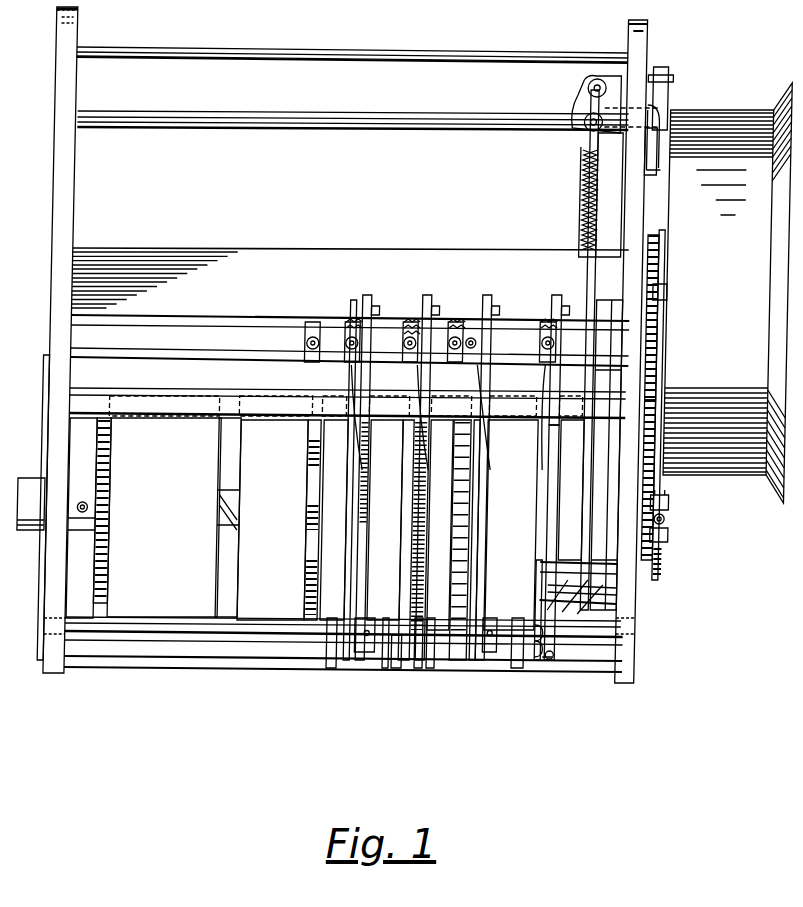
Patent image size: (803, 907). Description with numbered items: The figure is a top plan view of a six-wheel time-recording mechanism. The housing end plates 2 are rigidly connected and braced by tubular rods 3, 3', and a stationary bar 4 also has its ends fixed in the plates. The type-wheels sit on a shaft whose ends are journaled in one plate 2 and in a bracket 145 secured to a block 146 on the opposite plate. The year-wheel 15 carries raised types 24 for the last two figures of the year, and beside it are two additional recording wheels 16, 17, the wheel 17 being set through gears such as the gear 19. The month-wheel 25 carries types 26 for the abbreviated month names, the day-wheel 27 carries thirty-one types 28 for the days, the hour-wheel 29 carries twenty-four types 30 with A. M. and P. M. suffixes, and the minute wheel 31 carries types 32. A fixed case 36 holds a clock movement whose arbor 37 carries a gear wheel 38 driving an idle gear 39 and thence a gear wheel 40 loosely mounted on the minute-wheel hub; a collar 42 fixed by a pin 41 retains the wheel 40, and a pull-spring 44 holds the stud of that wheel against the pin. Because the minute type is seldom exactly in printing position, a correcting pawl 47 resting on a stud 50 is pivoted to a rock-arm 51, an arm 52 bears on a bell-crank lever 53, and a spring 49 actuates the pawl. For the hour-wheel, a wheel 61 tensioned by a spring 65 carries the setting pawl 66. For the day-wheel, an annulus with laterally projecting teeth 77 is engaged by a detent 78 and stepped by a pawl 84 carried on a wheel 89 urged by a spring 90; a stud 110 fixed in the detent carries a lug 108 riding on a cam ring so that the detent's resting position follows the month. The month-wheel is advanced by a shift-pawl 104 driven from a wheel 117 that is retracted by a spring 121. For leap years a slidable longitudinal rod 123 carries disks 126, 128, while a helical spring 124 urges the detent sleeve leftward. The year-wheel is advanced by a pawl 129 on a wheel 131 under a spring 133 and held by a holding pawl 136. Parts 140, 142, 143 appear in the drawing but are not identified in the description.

The end plate 2 is at (69, 676).
The tubular rod 3 is at (352, 55).
The tubular rod 3' is at (353, 130).
The stationary bar 4 is at (276, 258).
The year-wheel 15 is at (343, 481).
The recording wheel 16 is at (272, 520).
The recording wheel 17 is at (164, 517).
The gear 19 is at (113, 606).
The raised types 24 is at (348, 611).
The month-wheel 25 is at (352, 543).
The raised types 26 is at (399, 666).
The day-wheel 27 is at (362, 581).
The raised types 28 is at (446, 661).
The hour-wheel 29 is at (623, 632).
The raised types 30 is at (562, 671).
The minute wheel 31 is at (572, 577).
The raised types 32 is at (592, 592).
The case 36 is at (758, 482).
The arbor 37 is at (673, 293).
The gear wheel 38 is at (667, 262).
The idle gear 39 is at (665, 367).
The gear wheel 40 is at (682, 565).
The pin 41 is at (677, 520).
The collar 42 is at (683, 541).
The pull-spring 44 is at (683, 502).
The pawl 47 is at (583, 265).
The spring 49 is at (583, 186).
The stud 50 is at (604, 262).
The rock-arm 51 is at (598, 78).
The arm 52 is at (675, 124).
The bell-crank lever 53 is at (661, 69).
The wheel 61 is at (554, 300).
The spring 65 is at (552, 325).
The setting pawl 66 is at (573, 641).
The teeth 77 is at (340, 436).
The detent 78 is at (479, 666).
The pawl 84 is at (466, 661).
The wheel 89 is at (497, 302).
The spring 90 is at (485, 331).
The shift-pawl 104 is at (434, 661).
The lug 108 is at (424, 661).
The stud 110 is at (409, 666).
The wheel 117 is at (436, 302).
The spring 121 is at (422, 330).
The longitudinal rod 123 is at (276, 651).
The helical spring 124 is at (539, 661).
The disk 126 is at (524, 661).
The disk 128 is at (379, 656).
The pawl 129 is at (359, 661).
The wheel 131 is at (376, 302).
The spring 133 is at (362, 325).
The holding pawl 136 is at (299, 351).
The base bar 140 is at (207, 656).
The rail 142 is at (207, 349).
The tray 143 is at (192, 415).
The bracket 145 is at (633, 641).
The block 146 is at (613, 611).